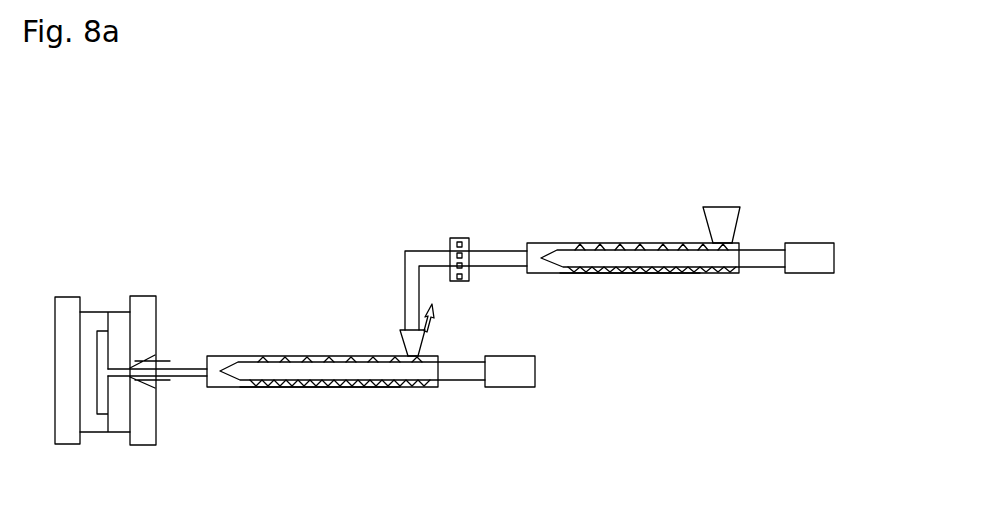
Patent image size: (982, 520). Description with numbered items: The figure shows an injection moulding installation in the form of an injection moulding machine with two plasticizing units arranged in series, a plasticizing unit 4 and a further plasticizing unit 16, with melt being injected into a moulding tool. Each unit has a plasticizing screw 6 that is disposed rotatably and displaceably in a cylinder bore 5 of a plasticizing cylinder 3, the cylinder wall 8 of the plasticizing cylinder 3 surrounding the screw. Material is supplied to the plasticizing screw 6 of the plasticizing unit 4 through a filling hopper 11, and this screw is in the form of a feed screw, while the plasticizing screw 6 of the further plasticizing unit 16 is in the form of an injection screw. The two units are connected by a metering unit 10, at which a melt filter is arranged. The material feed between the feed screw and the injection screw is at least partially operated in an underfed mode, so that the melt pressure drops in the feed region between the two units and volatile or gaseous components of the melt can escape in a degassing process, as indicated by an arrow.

The plasticizing cylinder 3 is at (540, 243).
The plasticizing unit 4 is at (588, 214).
The cylinder bore 5 is at (738, 243).
The plasticizing screw 6 is at (638, 267).
The cylinder wall 8 is at (585, 285).
The metering unit 10 is at (410, 250).
The filling hopper 11 is at (708, 217).
The further plasticizing unit 16 is at (296, 334).